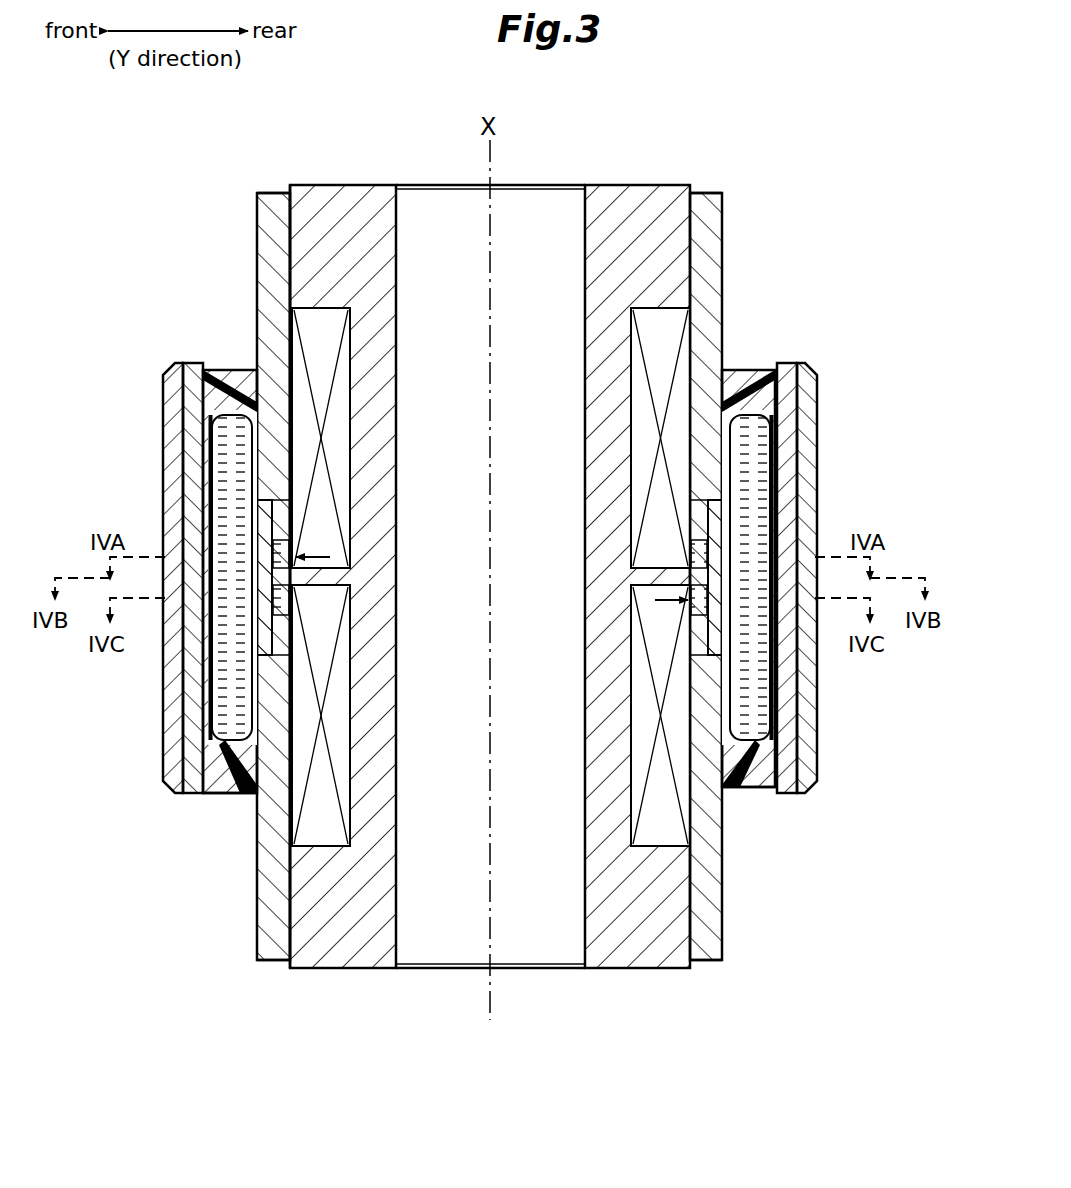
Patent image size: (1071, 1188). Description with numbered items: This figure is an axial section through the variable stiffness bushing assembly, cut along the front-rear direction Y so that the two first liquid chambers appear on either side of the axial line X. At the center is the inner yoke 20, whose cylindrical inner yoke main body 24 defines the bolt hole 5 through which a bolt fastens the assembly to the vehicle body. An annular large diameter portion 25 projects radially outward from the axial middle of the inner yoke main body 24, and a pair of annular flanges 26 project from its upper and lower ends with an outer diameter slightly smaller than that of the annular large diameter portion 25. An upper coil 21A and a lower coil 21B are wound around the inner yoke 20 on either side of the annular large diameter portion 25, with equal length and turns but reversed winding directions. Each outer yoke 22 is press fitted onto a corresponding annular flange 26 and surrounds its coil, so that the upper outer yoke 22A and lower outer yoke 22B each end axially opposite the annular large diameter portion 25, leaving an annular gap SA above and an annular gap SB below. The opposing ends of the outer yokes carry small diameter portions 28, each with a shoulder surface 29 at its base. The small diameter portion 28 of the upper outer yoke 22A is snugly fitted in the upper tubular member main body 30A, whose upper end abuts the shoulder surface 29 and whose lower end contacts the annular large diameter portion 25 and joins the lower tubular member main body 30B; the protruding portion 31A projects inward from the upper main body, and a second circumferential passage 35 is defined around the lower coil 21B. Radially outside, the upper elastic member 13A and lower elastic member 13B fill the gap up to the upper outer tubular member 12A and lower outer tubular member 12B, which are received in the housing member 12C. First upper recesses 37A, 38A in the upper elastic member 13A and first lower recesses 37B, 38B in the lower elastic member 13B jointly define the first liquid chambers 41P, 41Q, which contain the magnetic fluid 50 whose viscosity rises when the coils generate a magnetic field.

The bolt hole 5 is at (580, 218).
The inner yoke 20 is at (602, 200).
The upper coil 21A is at (640, 345).
The lower coil 21B is at (640, 748).
The outer yoke 22 is at (715, 228).
The upper outer yoke 22A is at (275, 212).
The lower outer yoke 22B is at (272, 945).
The inner yoke main body 24 is at (385, 403).
The annular large diameter portion 25 is at (262, 535).
The annular flange 26 is at (662, 205).
The small diameter portion 28 is at (385, 452).
The shoulder surface 29 is at (242, 790).
The upper tubular member main body 30A is at (690, 520).
The lower tubular member main body 30B is at (290, 630).
The protruding portion 31A is at (700, 575).
The second circumferential passage 35 is at (700, 605).
The magnetic fluid 50 is at (290, 558).
The annular gap SA is at (330, 557).
The annular gap SB is at (655, 600).
The upper outer tubular member 12A is at (788, 370).
The lower outer tubular member 12B is at (785, 795).
The housing member 12C is at (812, 432).
The upper elastic member 13A is at (232, 372).
The lower elastic member 13B is at (225, 778).
The first upper recess 37A is at (222, 455).
The first lower recess 37B is at (225, 652).
The first upper recess 38A is at (752, 447).
The first lower recess 38B is at (752, 650).
The first liquid chamber 41P is at (228, 708).
The first liquid chamber 41Q is at (748, 695).